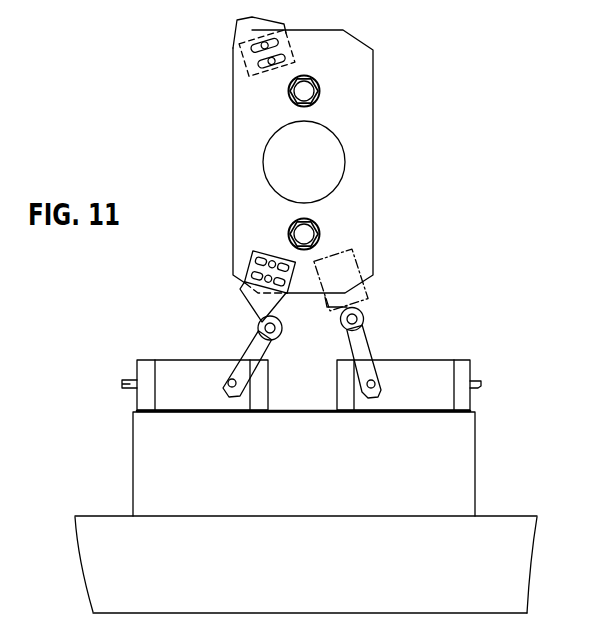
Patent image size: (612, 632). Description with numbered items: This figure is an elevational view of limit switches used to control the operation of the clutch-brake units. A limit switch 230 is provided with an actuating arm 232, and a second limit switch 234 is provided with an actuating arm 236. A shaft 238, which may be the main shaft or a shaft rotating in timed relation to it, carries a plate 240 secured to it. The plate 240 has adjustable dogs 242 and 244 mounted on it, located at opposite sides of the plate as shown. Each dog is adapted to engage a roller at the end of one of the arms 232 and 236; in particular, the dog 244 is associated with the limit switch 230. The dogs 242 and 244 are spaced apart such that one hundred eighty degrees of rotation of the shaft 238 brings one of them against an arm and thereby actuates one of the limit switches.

The limit switch 230 is at (163, 360).
The actuating arm 232 is at (277, 345).
The limit switch 234 is at (444, 360).
The actuating arm 236 is at (364, 326).
The shaft 238 is at (344, 155).
The plate 240 is at (374, 88).
The adjustable dog 242 is at (236, 33).
The adjustable dog 244 is at (251, 305).